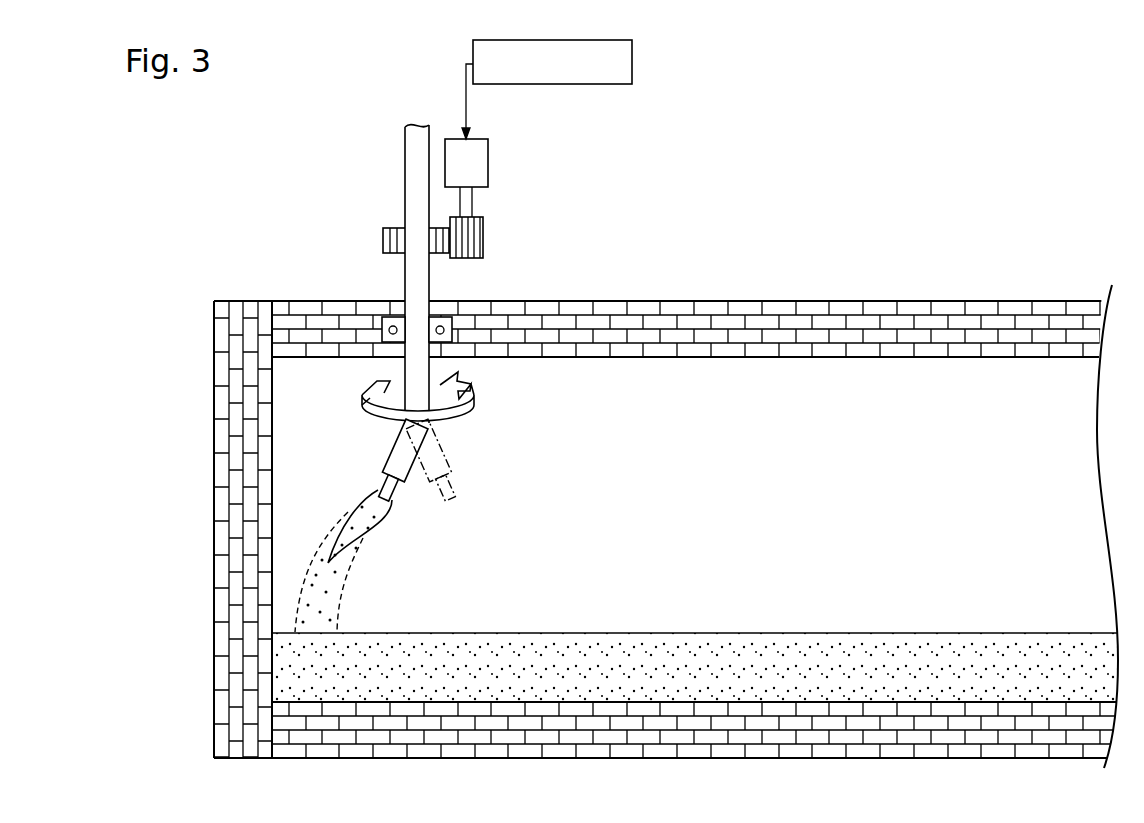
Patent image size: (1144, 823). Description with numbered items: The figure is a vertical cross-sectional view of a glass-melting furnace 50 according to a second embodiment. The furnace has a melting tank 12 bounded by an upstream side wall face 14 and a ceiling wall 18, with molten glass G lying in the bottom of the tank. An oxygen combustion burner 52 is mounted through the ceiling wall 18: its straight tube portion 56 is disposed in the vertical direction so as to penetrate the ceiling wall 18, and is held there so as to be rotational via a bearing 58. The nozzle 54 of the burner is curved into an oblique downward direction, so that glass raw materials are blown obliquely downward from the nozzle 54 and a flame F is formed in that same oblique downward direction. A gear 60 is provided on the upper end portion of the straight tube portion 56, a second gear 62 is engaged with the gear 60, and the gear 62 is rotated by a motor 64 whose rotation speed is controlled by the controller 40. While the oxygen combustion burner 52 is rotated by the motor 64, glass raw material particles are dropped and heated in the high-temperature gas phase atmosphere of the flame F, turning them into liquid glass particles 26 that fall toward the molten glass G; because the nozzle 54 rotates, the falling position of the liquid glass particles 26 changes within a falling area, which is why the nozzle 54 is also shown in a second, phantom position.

The melting tank 12 is at (667, 490).
The upstream side wall face 14 is at (283, 450).
The ceiling wall 18 is at (600, 338).
The liquid glass particles 26 is at (330, 533).
The controller 40 is at (632, 66).
The glass-melting furnace 50 is at (636, 336).
The oxygen combustion burner 52 is at (397, 371).
The nozzle 54 is at (385, 487).
The straight tube portion 56 is at (430, 368).
The bearing 58 is at (445, 320).
The gear 60 is at (392, 232).
The gear 62 is at (483, 238).
The motor 64 is at (488, 165).
The flame F is at (383, 523).
The molten glass G is at (740, 612).